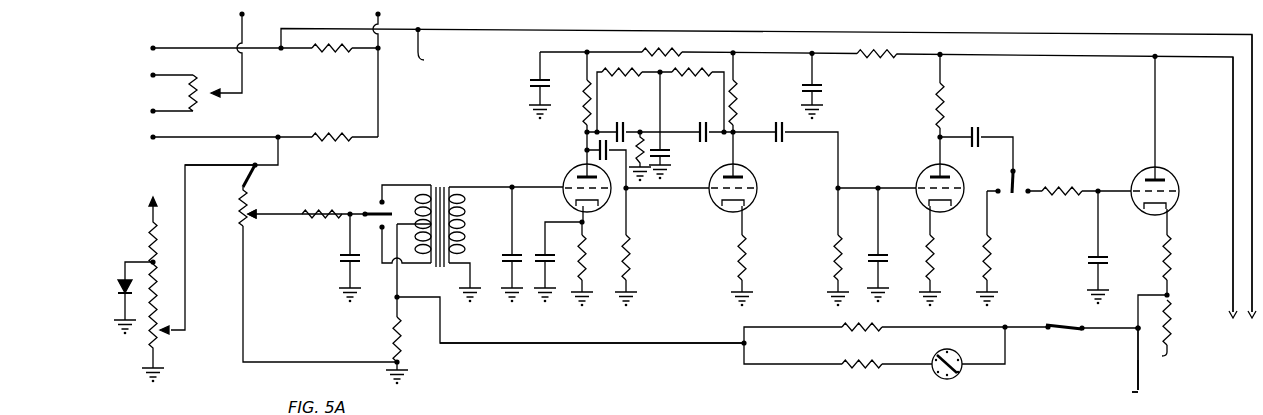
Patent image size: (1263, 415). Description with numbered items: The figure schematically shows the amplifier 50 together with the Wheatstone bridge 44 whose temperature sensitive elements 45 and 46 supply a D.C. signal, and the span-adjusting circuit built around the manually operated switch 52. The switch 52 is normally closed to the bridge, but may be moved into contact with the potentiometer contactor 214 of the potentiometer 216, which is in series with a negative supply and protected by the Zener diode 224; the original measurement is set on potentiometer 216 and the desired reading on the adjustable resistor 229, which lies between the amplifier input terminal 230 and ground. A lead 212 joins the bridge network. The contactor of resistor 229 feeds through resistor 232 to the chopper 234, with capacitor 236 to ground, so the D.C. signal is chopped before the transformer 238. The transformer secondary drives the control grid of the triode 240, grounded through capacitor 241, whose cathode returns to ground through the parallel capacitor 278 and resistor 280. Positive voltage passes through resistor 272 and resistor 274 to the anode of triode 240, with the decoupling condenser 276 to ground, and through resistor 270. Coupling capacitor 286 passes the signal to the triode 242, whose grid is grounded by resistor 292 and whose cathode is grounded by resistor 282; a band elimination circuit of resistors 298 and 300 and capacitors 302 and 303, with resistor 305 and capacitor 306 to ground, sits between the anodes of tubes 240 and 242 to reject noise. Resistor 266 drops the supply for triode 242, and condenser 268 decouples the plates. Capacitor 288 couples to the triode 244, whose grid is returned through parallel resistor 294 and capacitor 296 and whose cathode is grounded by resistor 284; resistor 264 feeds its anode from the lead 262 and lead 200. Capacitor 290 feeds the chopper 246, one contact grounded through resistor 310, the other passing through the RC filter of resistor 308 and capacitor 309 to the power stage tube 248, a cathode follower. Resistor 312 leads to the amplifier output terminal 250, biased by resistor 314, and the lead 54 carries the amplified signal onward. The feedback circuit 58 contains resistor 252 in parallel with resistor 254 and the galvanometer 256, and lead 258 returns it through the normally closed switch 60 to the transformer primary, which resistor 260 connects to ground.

The temperature sensitive element 45 is at (150, 71).
The temperature sensitive element 46 is at (145, 133).
The Wheatstone bridge 44 is at (314, 110).
The conductor 212 is at (437, 52).
The amplifier 50 is at (497, 123).
The potentiometer contactor 214 is at (230, 167).
The switch 52 is at (250, 163).
The amplifier input terminal 230 is at (247, 187).
The adjustable resistor 229 is at (238, 213).
The resistor 232 is at (342, 213).
The capacitor 236 is at (346, 250).
The chopper 234 is at (373, 205).
The Zener diode 224 is at (124, 272).
The potentiometer 216 is at (160, 338).
The transformer 238 is at (443, 185).
The capacitor 241 is at (508, 246).
The capacitor 278 is at (550, 262).
The resistor 280 is at (584, 254).
The triode 240 is at (573, 203).
The resistor 292 is at (634, 250).
The resistor 260 is at (401, 342).
The lead 258 is at (722, 347).
The decoupling condenser 276 is at (534, 82).
The resistor 274 is at (583, 118).
The capacitor 286 is at (586, 146).
The resistor 298 is at (640, 82).
The resistor 300 is at (708, 82).
The capacitor 302 is at (641, 126).
The capacitor 303 is at (703, 126).
The resistor 305 is at (664, 145).
The capacitor 306 is at (668, 163).
The resistor 272 is at (643, 50).
The resistor 270 is at (740, 95).
The capacitor 288 is at (782, 126).
The decoupling condenser 268 is at (819, 83).
The resistor 266 is at (858, 53).
The resistor 264 is at (946, 95).
The capacitor 290 is at (982, 134).
The chopper 246 is at (1017, 176).
The resistor 308 is at (1056, 187).
The power stage tube 248 is at (1171, 176).
The triode 242 is at (740, 208).
The resistor 282 is at (748, 252).
The resistor 294 is at (834, 256).
The capacitor 296 is at (882, 252).
The triode 244 is at (934, 214).
The resistor 284 is at (936, 258).
The resistor 310 is at (993, 263).
The capacitor 309 is at (1102, 253).
The resistor 312 is at (1173, 246).
The resistor 314 is at (1173, 301).
The lead 262 is at (1231, 309).
The conductor 200 is at (1250, 306).
The feedback circuit 58 is at (1135, 327).
The amplifier output terminal 250 is at (1134, 334).
The switch 60 is at (1075, 332).
The lead 54 is at (1144, 372).
The galvanometer 256 is at (963, 370).
The resistor 252 is at (841, 332).
The resistor 254 is at (877, 368).